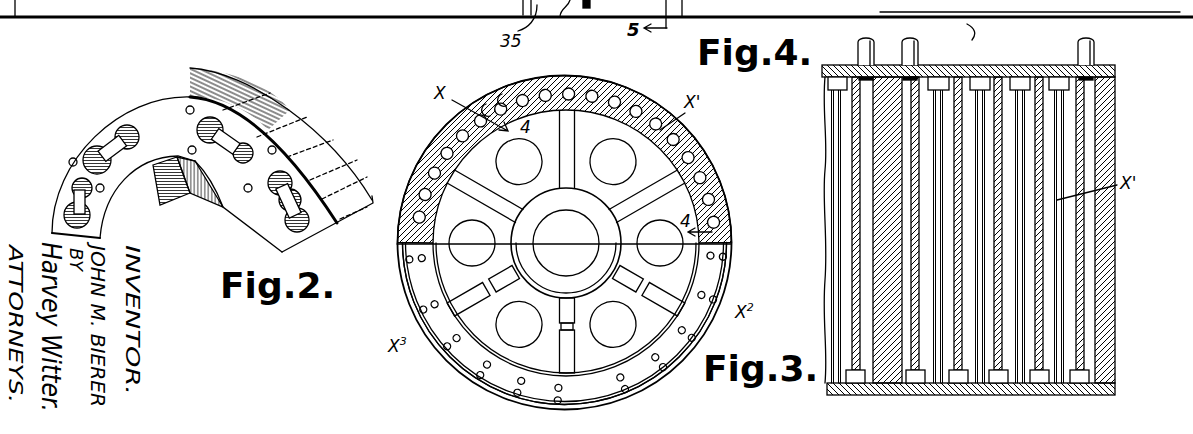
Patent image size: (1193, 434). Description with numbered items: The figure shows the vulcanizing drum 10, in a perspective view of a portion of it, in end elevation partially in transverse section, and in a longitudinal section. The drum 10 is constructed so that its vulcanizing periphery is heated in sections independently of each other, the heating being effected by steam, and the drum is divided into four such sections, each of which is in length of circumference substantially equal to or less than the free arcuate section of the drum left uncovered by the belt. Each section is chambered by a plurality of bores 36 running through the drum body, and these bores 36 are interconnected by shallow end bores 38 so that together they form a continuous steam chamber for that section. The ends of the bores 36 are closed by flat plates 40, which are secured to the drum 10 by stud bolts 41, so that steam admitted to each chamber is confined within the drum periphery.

In FIG. 2, the vulcanizing drum 10 is at (260, 87).
In FIG. 3, the vulcanizing drum 10 is at (575, 78).
In FIG. 4, the vulcanizing drum 10 is at (1107, 235).
In FIG. 2, the bores 36 is at (68, 216).
In FIG. 3, the bores 36 is at (433, 167).
In FIG. 4, the bores 36 is at (1087, 157).
In FIG. 2, the shallow end bores 38 is at (305, 207).
In FIG. 3, the shallow end bores 38 is at (658, 103).
In FIG. 4, the shallow end bores 38 is at (1013, 72).
In FIG. 3, the flat plates 40 is at (715, 278).
In FIG. 4, the flat plates 40 is at (1103, 68).
In FIG. 3, the stud bolts 41 is at (449, 348).